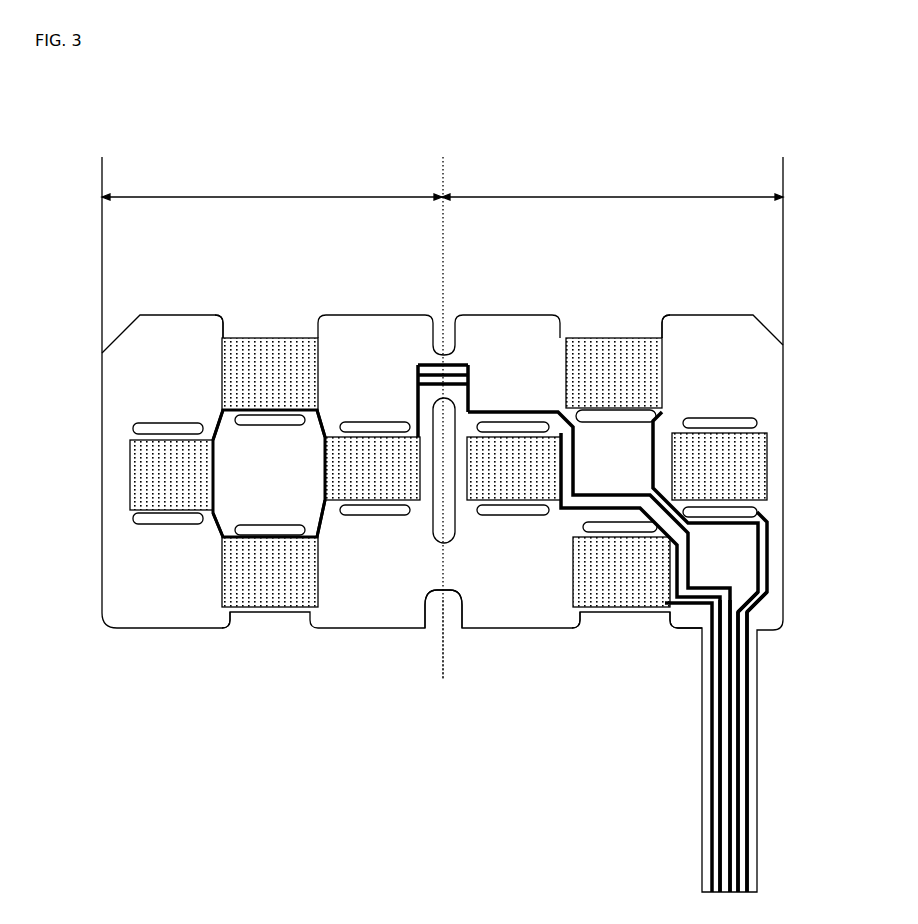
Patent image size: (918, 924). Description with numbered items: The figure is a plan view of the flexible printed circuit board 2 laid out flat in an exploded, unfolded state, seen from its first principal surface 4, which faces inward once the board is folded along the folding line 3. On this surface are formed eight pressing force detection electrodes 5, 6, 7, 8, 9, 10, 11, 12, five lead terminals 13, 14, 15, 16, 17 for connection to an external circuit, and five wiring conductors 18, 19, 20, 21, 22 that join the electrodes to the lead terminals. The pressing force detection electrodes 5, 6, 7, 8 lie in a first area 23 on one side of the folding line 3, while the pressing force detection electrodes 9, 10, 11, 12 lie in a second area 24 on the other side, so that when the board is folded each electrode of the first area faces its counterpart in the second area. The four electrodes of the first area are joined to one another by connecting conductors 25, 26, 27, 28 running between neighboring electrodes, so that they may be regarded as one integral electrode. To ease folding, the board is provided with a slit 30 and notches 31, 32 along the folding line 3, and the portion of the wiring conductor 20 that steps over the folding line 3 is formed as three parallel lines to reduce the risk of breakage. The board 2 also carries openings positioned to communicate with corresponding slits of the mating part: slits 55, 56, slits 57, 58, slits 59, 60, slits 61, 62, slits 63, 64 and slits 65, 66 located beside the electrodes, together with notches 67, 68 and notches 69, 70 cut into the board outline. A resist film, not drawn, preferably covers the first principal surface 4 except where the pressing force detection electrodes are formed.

The flexible printed circuit board 2 is at (248, 328).
The folding line 3 is at (445, 296).
The first principal surface 4 is at (777, 360).
The pressing force detection electrode 5 is at (140, 466).
The pressing force detection electrode 6 is at (263, 350).
The pressing force detection electrode 7 is at (373, 485).
The pressing force detection electrode 8 is at (257, 590).
The pressing force detection electrode 9 is at (745, 453).
The pressing force detection electrode 10 is at (626, 350).
The pressing force detection electrode 11 is at (500, 490).
The pressing force detection electrode 12 is at (610, 585).
The lead terminal 13 is at (750, 787).
The lead terminal 14 is at (742, 813).
The lead terminal 15 is at (733, 837).
The lead terminal 16 is at (725, 863).
The lead terminal 17 is at (717, 888).
The wiring conductor 18 is at (760, 516).
The wiring conductor 19 is at (767, 540).
The wiring conductor 20 is at (690, 568).
The wiring conductor 21 is at (742, 604).
The wiring conductor 22 is at (675, 618).
The first area 23 is at (297, 195).
The second area 24 is at (570, 195).
The connecting conductor 25 is at (215, 430).
The connecting conductor 26 is at (322, 425).
The connecting conductor 27 is at (322, 540).
The connecting conductor 28 is at (213, 520).
The slit 30 is at (428, 606).
The notch 31 is at (438, 312).
The notch 32 is at (438, 605).
The slit 55 is at (137, 428).
The slit 56 is at (752, 424).
The slit 57 is at (137, 517).
The slit 58 is at (752, 511).
The slit 59 is at (289, 418).
The slit 60 is at (591, 412).
The slit 61 is at (386, 424).
The slit 62 is at (496, 424).
The slit 63 is at (394, 512).
The slit 64 is at (533, 512).
The slit 65 is at (290, 533).
The slit 66 is at (642, 530).
The notch 67 is at (230, 335).
The notch 68 is at (660, 330).
The notch 69 is at (232, 625).
The notch 70 is at (582, 622).